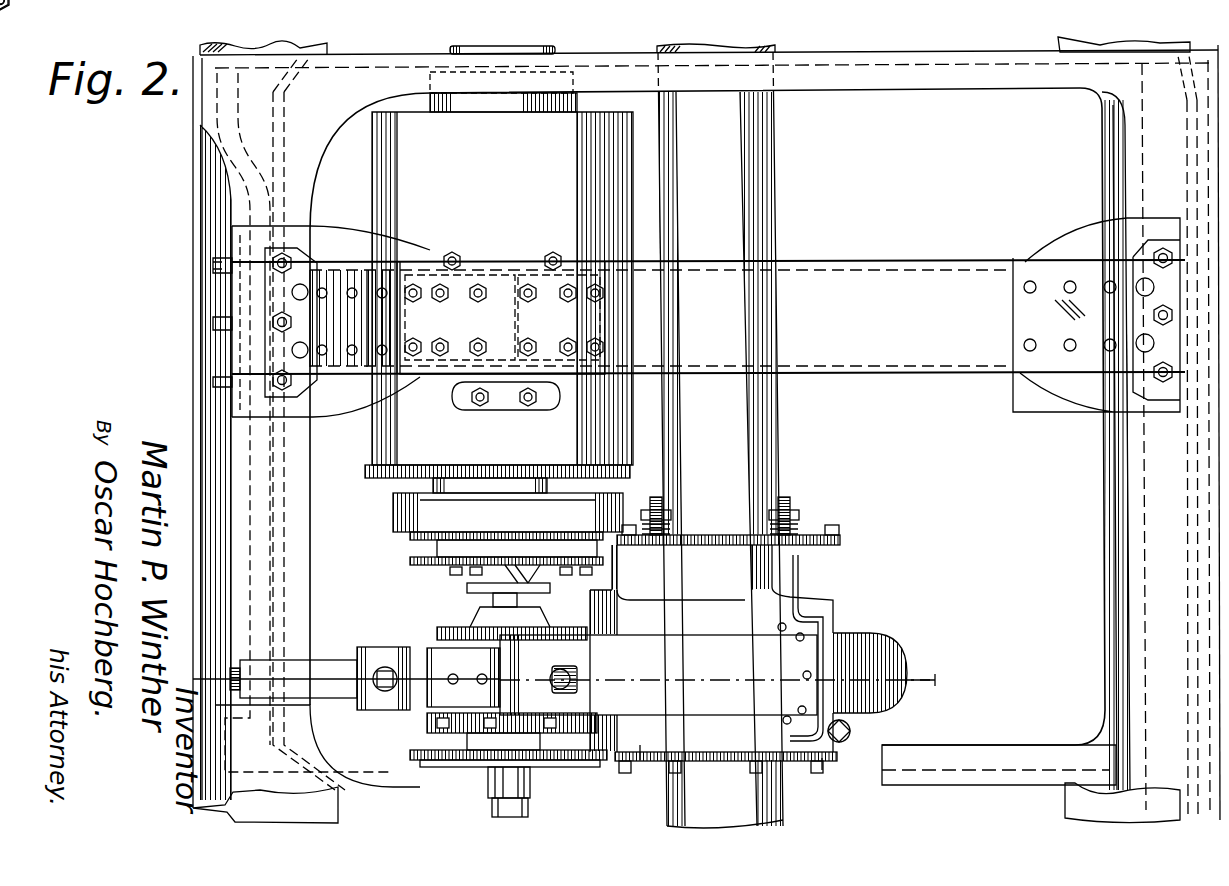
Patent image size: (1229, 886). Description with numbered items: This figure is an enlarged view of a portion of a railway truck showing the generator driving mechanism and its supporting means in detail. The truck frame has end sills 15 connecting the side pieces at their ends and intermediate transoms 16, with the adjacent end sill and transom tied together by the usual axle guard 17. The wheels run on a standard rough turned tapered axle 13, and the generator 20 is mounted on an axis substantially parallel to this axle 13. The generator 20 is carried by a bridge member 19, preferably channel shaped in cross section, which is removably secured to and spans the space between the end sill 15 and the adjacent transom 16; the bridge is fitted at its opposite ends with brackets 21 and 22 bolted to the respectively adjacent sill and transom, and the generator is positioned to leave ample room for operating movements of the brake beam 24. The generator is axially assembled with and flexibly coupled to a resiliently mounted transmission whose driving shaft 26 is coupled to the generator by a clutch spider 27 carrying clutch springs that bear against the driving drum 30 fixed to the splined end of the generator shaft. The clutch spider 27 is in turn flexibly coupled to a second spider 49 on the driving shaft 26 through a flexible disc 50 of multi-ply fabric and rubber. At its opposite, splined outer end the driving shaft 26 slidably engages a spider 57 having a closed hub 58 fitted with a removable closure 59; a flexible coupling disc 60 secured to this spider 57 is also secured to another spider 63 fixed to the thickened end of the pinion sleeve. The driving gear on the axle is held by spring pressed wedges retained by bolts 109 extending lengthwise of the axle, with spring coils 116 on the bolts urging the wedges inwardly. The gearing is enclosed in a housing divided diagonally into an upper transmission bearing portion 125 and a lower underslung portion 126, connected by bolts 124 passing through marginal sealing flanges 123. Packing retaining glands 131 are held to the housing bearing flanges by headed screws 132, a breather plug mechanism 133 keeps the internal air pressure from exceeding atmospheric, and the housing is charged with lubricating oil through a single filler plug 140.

The axle 13 is at (777, 434).
The end sill 15 is at (240, 483).
The transom 16 is at (1120, 128).
The axle guard 17 is at (958, 90).
The bridge member 19 is at (876, 262).
The generator 20 is at (410, 152).
The bracket 21 is at (356, 246).
The bracket 22 is at (1078, 240).
The brake beam 24 is at (200, 430).
The driving shaft 26 is at (494, 600).
The clutch spider 27 is at (478, 290).
The driving drum 30 is at (392, 513).
The second spider 49 is at (478, 582).
The flexible disc 50 is at (410, 563).
The spider 57 is at (472, 770).
The closed hub 58 is at (530, 785).
The removable closure 59 is at (528, 810).
The flexible coupling disc 60 is at (425, 767).
The spider 63 is at (425, 745).
The bolts 109 is at (806, 498).
The spring coils 116 is at (815, 537).
The marginal sealing flanges 123 is at (826, 625).
The bolts 124 is at (805, 675).
The upper housing portion 125 is at (690, 705).
The lower housing portion 126 is at (908, 645).
The packing retaining glands 131 is at (830, 540).
The headed screws 132 is at (818, 774).
The breather plug mechanism 133 is at (575, 679).
The filler plug 140 is at (852, 728).